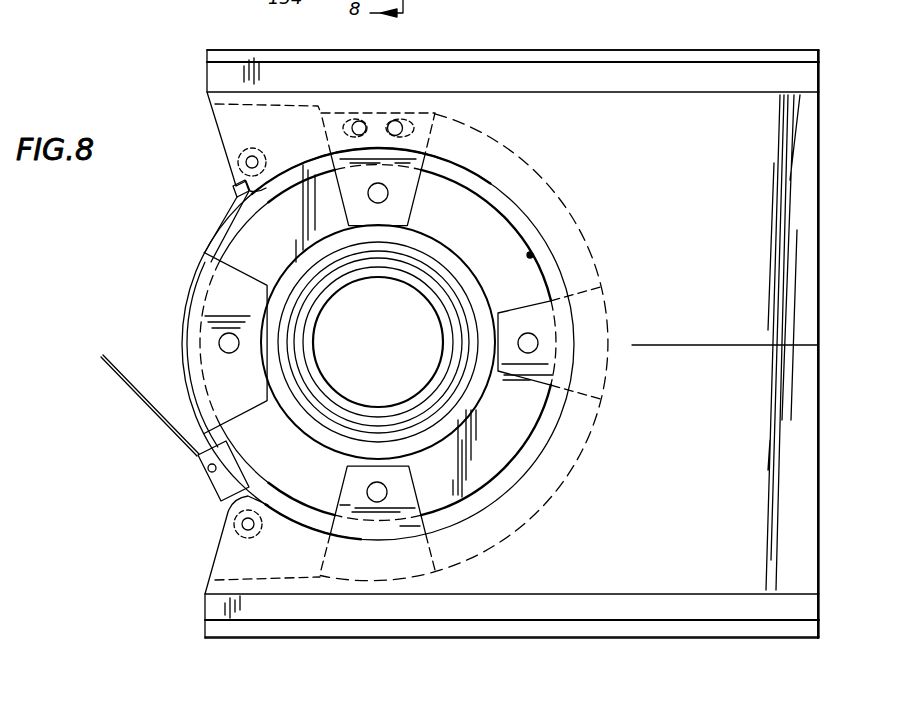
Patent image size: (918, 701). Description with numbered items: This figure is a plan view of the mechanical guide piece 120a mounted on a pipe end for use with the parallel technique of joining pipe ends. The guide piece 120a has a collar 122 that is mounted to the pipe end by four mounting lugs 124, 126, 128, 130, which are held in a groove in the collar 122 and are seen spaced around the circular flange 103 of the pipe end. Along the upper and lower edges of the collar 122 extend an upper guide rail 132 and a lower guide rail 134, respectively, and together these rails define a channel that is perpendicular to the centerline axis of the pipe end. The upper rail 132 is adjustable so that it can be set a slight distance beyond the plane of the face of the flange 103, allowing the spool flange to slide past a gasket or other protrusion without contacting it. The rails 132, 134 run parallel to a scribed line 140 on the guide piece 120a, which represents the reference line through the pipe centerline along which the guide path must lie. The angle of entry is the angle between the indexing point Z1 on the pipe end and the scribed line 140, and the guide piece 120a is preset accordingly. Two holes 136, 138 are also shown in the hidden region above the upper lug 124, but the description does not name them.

The guide piece 120a is at (172, 81).
The flange 103 is at (238, 244).
The collar 122 is at (676, 50).
The mounting lug 124 is at (423, 163).
The mounting lug 126 is at (549, 370).
The mounting lug 128 is at (422, 511).
The mounting lug 130 is at (222, 287).
The upper guide rail 132 is at (728, 58).
The lower guide rail 134 is at (665, 630).
The bolt hole 136 is at (402, 126).
The bolt hole 138 is at (359, 126).
The scribed line 140 is at (710, 345).
The indexing point Z1 is at (531, 253).